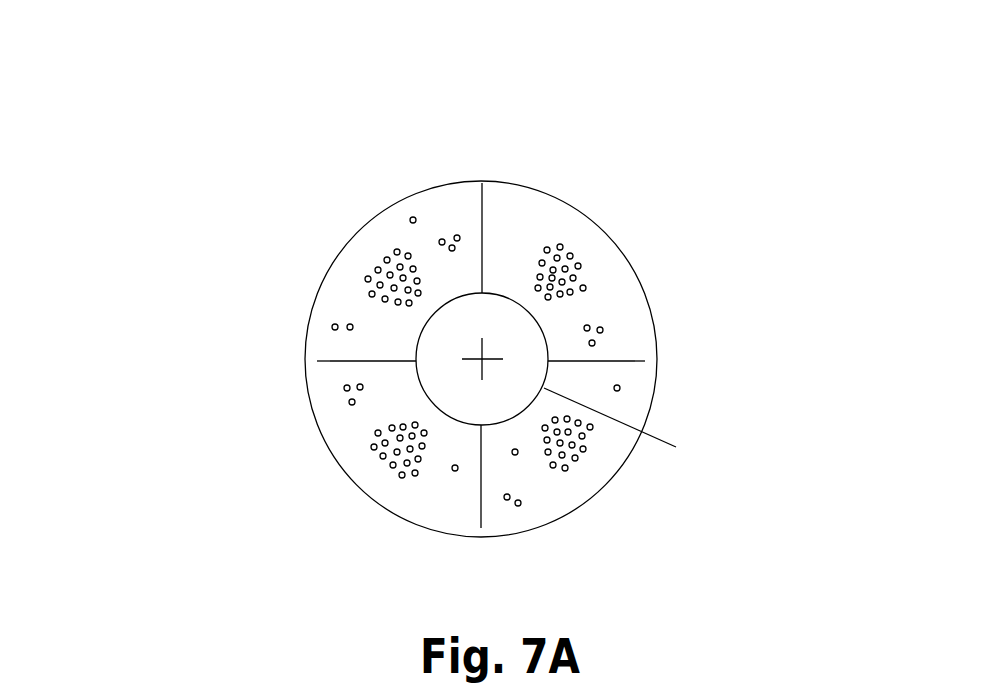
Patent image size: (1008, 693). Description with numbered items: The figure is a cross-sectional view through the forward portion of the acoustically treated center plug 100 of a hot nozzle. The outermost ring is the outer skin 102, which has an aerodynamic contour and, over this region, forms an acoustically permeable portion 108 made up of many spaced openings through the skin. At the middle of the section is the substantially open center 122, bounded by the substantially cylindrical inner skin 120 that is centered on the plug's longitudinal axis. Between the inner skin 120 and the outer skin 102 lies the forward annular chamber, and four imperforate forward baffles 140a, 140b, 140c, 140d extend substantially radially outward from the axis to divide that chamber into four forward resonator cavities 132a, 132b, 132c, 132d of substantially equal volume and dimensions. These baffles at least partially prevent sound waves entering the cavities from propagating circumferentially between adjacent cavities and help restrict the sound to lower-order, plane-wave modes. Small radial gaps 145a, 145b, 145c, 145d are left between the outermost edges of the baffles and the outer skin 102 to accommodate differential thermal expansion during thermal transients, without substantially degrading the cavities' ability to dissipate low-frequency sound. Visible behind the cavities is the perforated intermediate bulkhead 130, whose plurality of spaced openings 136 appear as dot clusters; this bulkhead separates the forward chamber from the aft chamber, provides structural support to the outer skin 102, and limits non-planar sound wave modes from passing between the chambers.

The center plug 100 is at (606, 82).
The outer skin 102 is at (643, 287).
The acoustically permeable portion 108 is at (577, 359).
The inner skin 120 is at (641, 425).
The open center 122 is at (505, 332).
The perforated intermediate bulkhead 130 is at (546, 225).
The forward resonator cavity 132a is at (363, 460).
The forward resonator cavity 132b is at (259, 261).
The forward resonator cavity 132c is at (636, 259).
The forward resonator cavity 132d is at (593, 462).
The spaced openings 136 is at (385, 260).
The forward baffle 140a is at (340, 362).
The forward baffle 140b is at (480, 222).
The forward baffle 140c is at (613, 361).
The forward baffle 140d is at (480, 506).
The radial gap 145a is at (316, 358).
The radial gap 145b is at (489, 182).
The radial gap 145c is at (652, 363).
The radial gap 145d is at (485, 537).